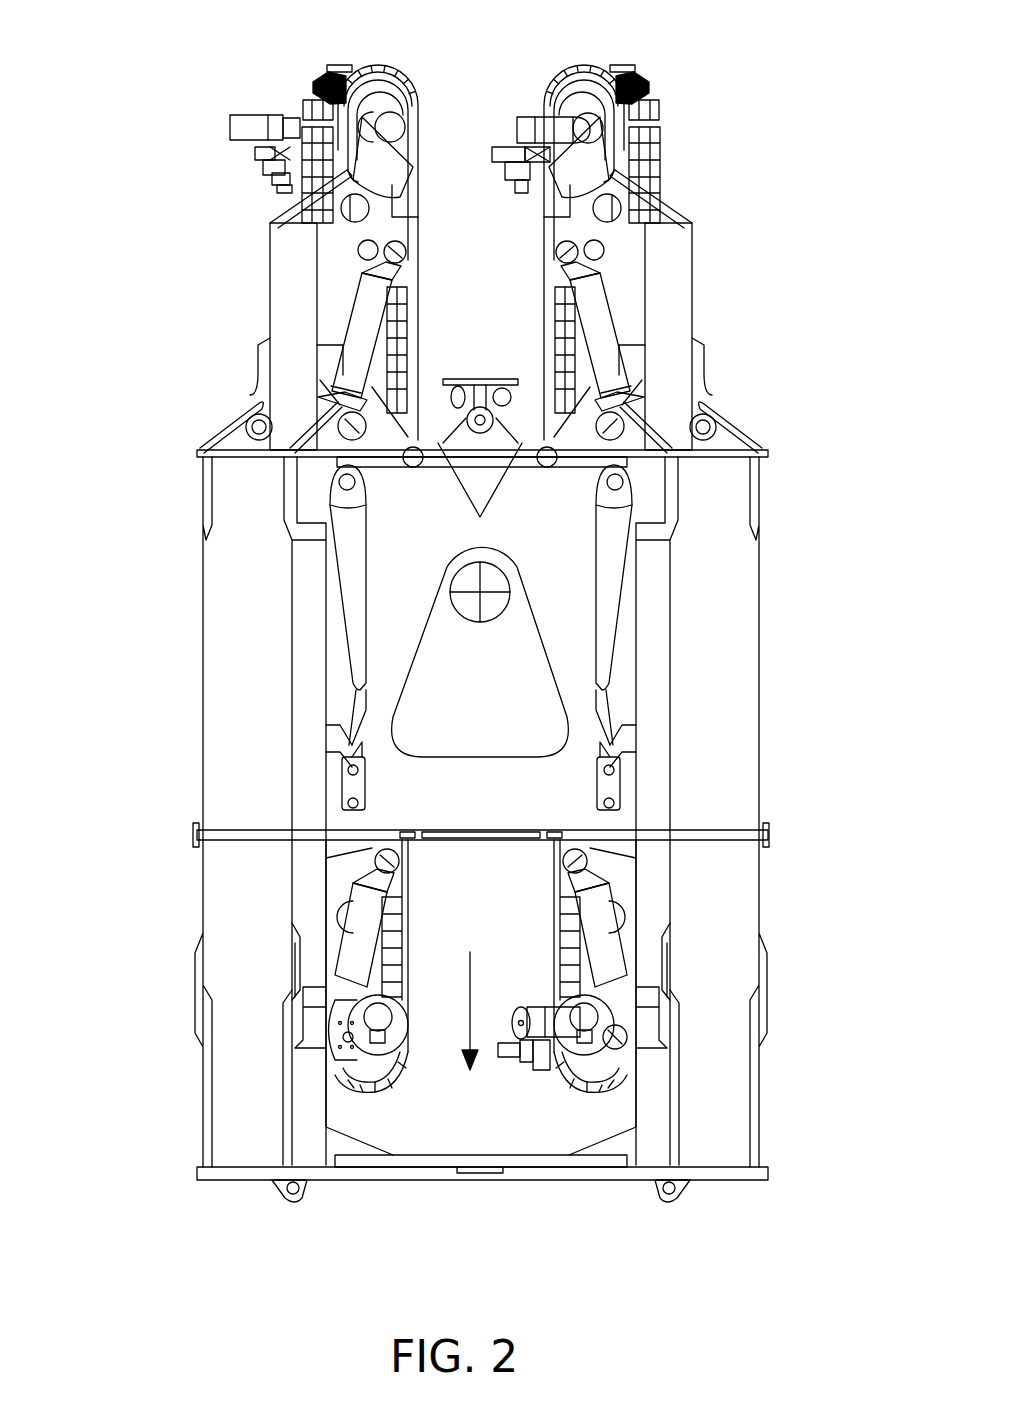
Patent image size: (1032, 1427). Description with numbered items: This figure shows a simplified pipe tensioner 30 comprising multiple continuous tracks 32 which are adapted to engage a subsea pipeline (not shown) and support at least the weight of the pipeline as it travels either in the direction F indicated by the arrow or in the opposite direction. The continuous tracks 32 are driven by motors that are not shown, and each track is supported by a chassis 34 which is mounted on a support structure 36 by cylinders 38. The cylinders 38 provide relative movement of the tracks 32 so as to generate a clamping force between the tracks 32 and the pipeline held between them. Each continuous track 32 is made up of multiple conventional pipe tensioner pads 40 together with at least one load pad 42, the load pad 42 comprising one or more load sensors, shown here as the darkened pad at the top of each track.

The pipe tensioner 30 is at (150, 356).
The continuous track 32 is at (252, 166).
The chassis 34 is at (680, 300).
The support structure 36 is at (768, 691).
The cylinder 38 is at (598, 955).
The pipe tensioner pad 40 is at (405, 85).
The load pad 42 is at (320, 85).